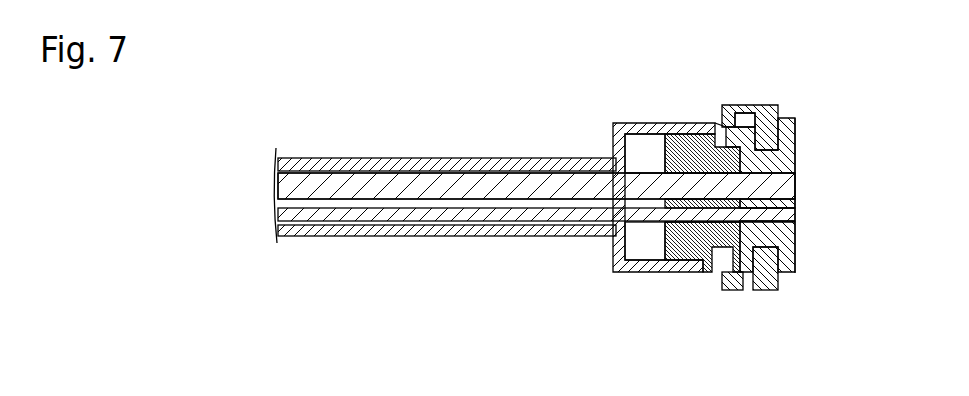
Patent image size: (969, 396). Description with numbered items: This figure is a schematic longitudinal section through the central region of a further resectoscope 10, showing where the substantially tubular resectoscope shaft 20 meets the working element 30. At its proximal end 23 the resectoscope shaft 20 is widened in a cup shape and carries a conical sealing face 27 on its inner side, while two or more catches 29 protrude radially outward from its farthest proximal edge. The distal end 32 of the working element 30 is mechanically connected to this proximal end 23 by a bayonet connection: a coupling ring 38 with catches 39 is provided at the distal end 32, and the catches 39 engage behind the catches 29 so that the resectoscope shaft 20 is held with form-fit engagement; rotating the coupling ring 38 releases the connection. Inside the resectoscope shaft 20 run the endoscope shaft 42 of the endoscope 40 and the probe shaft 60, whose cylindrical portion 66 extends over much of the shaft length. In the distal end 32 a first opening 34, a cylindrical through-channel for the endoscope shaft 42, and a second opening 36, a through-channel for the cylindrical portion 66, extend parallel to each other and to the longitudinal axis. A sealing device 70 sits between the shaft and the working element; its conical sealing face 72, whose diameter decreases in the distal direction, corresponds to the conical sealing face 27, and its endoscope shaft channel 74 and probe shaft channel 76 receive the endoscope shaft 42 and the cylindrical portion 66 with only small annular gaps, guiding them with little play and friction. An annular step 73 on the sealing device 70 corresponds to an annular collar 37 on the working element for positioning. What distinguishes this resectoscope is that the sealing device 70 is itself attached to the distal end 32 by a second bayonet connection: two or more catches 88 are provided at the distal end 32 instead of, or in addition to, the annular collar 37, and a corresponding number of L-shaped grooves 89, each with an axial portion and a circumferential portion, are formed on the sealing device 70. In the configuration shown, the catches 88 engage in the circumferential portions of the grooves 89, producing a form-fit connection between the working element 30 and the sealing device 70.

The resectoscope 10 is at (324, 78).
The resectoscope shaft 20 is at (450, 158).
The endoscope 40 is at (329, 197).
The endoscope shaft 42 is at (536, 186).
The probe shaft 60 is at (457, 219).
The cylindrical portion 66 is at (447, 230).
The proximal end 23 is at (683, 137).
The conical sealing face 27 is at (665, 138).
The endoscope shaft channel 74 is at (672, 180).
The L-shaped grooves 89 is at (694, 136).
The catches 88 is at (718, 145).
The working element 30 is at (790, 162).
The catches 29 is at (748, 122).
The catches 39 is at (733, 126).
The coupling ring 38 is at (778, 124).
The first opening 34 is at (793, 207).
The second opening 36 is at (790, 227).
The distal end 32 is at (797, 258).
The annular collar 37 is at (748, 272).
The annular step 73 is at (724, 266).
The sealing device 70 is at (701, 260).
The conical sealing face 72 is at (677, 258).
The probe shaft channel 76 is at (673, 219).